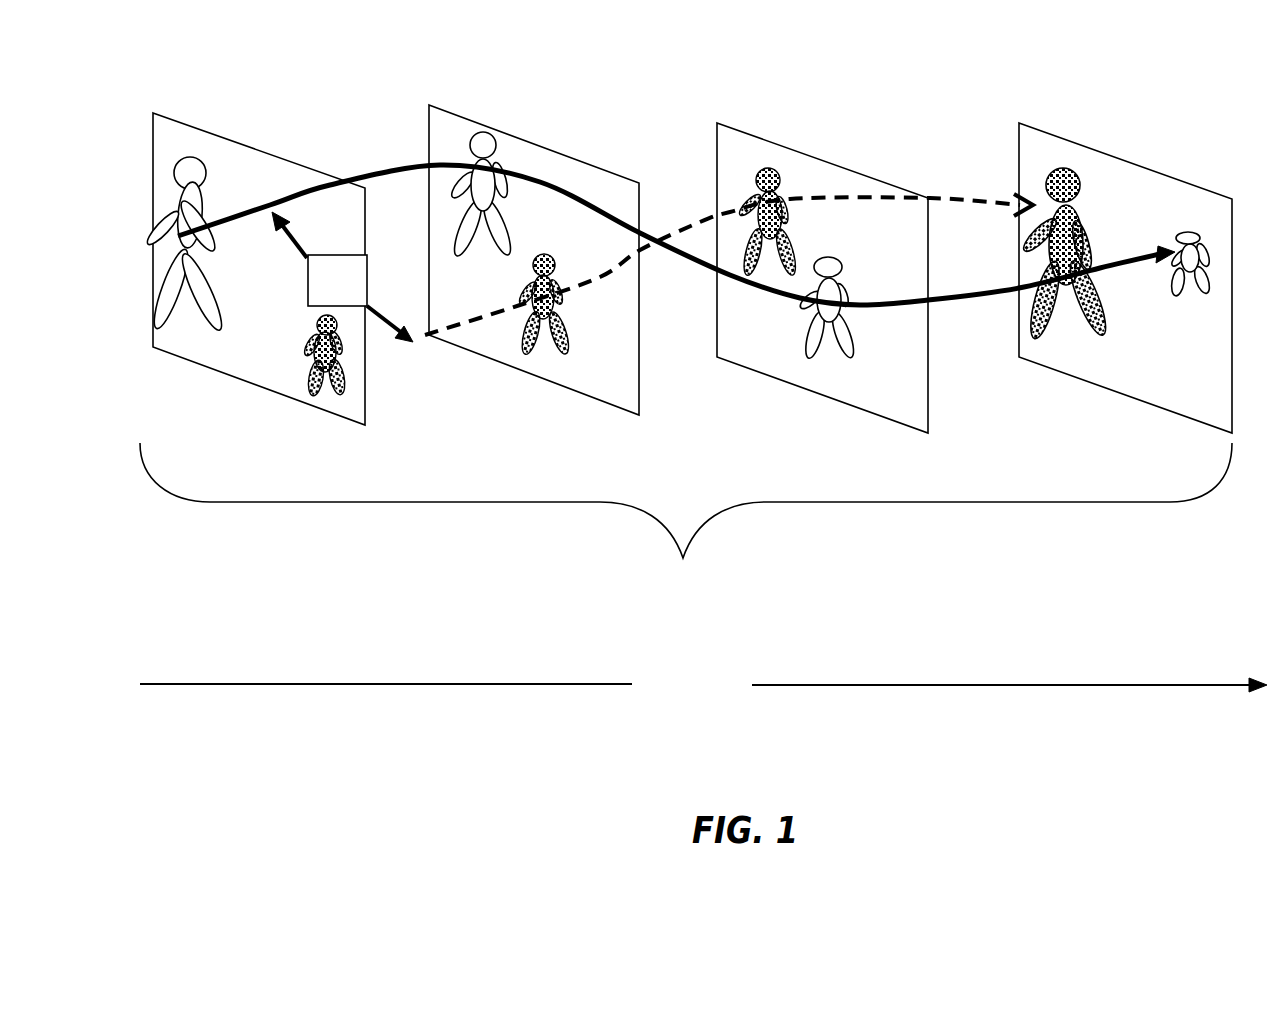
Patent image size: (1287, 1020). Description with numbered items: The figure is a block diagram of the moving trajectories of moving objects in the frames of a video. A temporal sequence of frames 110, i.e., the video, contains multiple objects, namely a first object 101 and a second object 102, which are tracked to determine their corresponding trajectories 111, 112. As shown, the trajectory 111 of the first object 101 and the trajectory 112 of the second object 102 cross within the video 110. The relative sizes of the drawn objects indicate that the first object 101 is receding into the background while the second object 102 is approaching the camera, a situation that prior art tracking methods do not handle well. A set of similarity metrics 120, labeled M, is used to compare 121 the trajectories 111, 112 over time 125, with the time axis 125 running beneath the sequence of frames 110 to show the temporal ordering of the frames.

The first object 101 is at (175, 195).
The second object 102 is at (770, 175).
The temporal sequence of frames 110 is at (686, 521).
The trajectory of first object 111 is at (378, 176).
The trajectory of second object 112 is at (377, 348).
The set of similarity metrics 120 is at (308, 306).
The compare 121 is at (288, 243).
The time 125 is at (1036, 684).